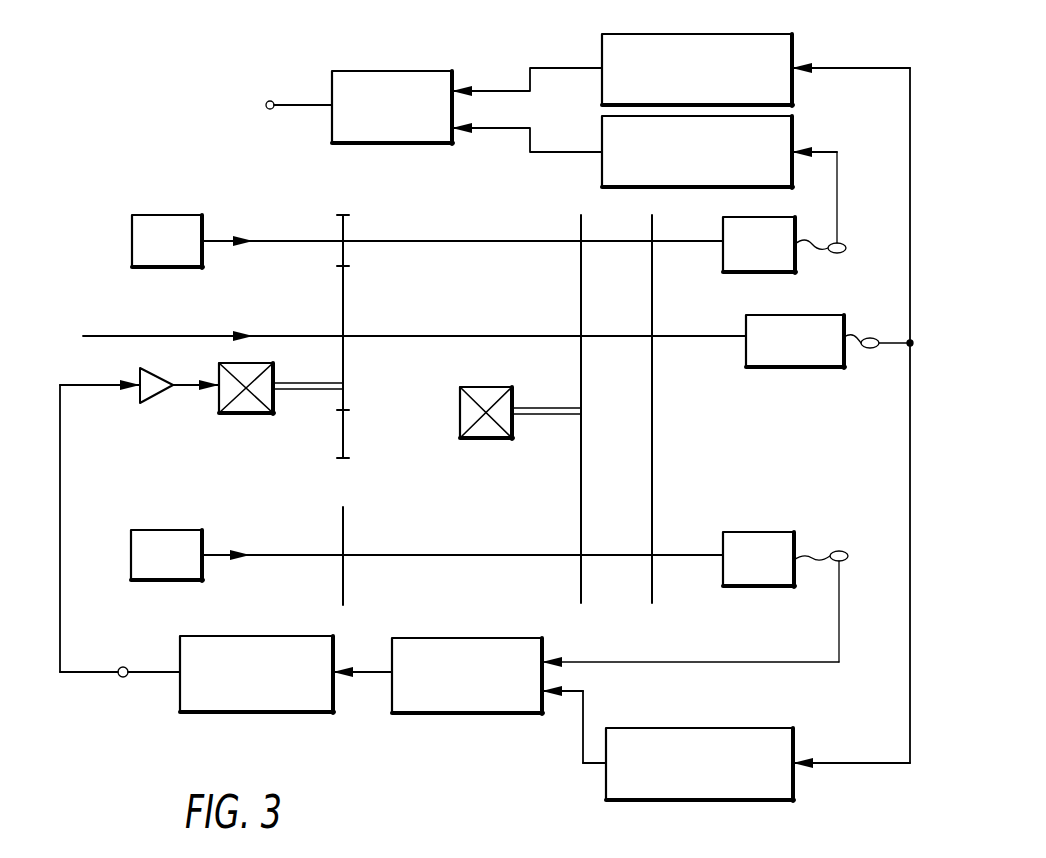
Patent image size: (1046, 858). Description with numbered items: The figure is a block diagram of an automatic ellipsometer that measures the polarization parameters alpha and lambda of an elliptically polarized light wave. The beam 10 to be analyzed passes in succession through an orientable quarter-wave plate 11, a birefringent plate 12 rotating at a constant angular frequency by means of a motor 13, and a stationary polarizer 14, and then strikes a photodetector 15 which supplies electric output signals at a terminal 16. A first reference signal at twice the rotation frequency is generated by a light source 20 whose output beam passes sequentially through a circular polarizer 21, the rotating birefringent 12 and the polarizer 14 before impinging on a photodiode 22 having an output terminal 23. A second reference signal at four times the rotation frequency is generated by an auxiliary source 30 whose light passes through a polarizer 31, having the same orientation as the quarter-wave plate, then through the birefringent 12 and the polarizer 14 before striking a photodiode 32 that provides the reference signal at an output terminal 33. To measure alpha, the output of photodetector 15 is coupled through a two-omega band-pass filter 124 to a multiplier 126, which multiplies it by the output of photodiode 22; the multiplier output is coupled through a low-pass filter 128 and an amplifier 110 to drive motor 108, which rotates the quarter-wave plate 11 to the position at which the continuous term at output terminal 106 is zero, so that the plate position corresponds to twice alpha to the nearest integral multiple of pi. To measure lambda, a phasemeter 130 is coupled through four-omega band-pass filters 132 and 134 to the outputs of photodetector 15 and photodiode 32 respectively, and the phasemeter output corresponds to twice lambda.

The beam 10 is at (93, 336).
The orientable quarter-wave plate 11 is at (345, 374).
The birefringent plate 12 is at (581, 390).
The motor 13 is at (460, 392).
The polarizer 14 is at (652, 392).
The photodetector 15 is at (760, 367).
The terminal 16 is at (874, 348).
The light source 20 is at (131, 552).
The circular polarizer 21 is at (343, 528).
The photodiode 22 is at (796, 538).
The output terminal 23 is at (846, 538).
The auxiliary source 30 is at (132, 240).
The polarizer 31 is at (343, 230).
The photodiode 32 is at (731, 272).
The output terminal 33 is at (846, 248).
The output terminal 106 is at (126, 666).
The motor 108 is at (274, 376).
The amplifier 110 is at (160, 384).
The 2ω band-pass filter 124 is at (732, 728).
The multiplier 126 is at (532, 638).
The low-pass filter 128 is at (304, 636).
The phasemeter 130 is at (453, 80).
The 4ω band-pass filter 132 is at (794, 136).
The 4ω band-pass filter 134 is at (794, 48).